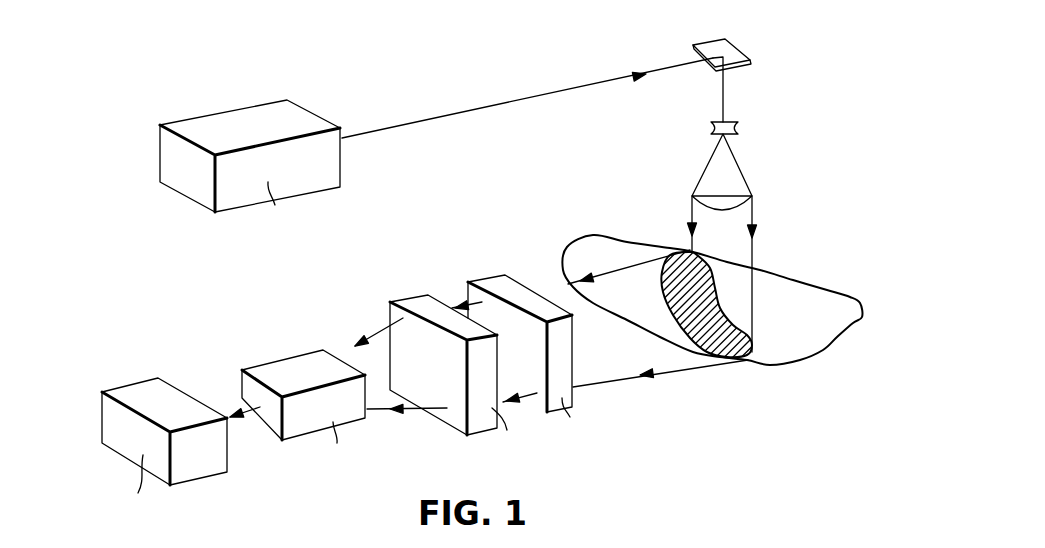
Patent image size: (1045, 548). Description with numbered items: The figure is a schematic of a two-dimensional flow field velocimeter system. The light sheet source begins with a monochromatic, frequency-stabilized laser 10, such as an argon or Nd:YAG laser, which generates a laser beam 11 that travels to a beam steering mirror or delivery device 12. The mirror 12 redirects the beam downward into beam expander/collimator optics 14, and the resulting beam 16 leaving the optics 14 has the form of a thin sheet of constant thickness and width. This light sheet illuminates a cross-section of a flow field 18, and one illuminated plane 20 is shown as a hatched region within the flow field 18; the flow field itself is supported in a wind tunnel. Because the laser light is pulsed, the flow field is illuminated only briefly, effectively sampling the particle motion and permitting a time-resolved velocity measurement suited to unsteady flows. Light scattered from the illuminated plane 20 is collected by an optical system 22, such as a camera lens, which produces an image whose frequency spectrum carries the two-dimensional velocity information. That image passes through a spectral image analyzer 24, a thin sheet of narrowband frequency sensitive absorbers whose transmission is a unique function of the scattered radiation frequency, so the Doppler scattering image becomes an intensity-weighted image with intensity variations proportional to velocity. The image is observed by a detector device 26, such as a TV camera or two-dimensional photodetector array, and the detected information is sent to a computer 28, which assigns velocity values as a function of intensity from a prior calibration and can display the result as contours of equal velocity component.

The laser 10 is at (257, 112).
The laser beam 11 is at (507, 105).
The beam steering mirror 12 is at (738, 44).
The beam expander/collimator optics 14 is at (745, 153).
The resulting beam 16 is at (742, 250).
The flow field 18 is at (840, 303).
The plane 20 is at (737, 357).
The optical system 22 is at (485, 277).
The spectral image analyzer 24 is at (407, 298).
The detector device 26 is at (295, 365).
The computer 28 is at (145, 393).